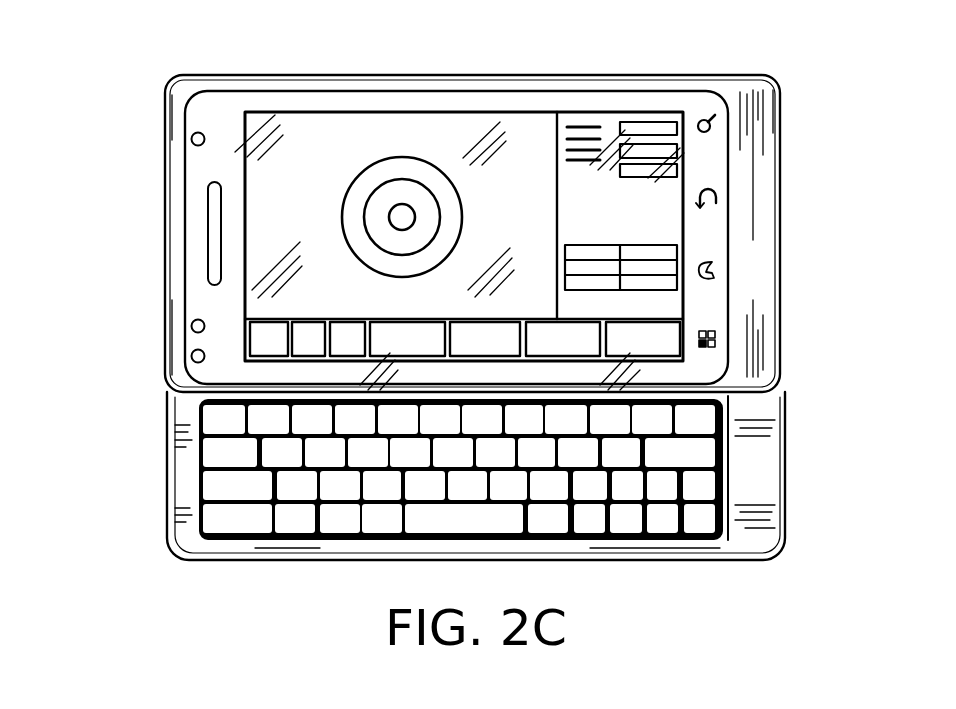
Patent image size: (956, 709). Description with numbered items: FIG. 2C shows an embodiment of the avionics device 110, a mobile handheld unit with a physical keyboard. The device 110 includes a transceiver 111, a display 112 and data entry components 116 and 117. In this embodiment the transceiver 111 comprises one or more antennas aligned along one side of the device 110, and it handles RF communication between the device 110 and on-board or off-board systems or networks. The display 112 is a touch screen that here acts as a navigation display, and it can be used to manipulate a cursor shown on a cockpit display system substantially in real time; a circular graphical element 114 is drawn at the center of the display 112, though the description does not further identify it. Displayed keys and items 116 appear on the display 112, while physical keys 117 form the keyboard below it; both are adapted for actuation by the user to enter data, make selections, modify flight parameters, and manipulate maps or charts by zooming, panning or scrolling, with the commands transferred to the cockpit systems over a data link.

The avionics device 110 is at (258, 34).
The transceiver 111 is at (765, 73).
The display 112 is at (329, 136).
The circular graphical element 114 is at (347, 192).
The displayed keys and items 116 is at (255, 340).
The physical keys 117 is at (203, 482).